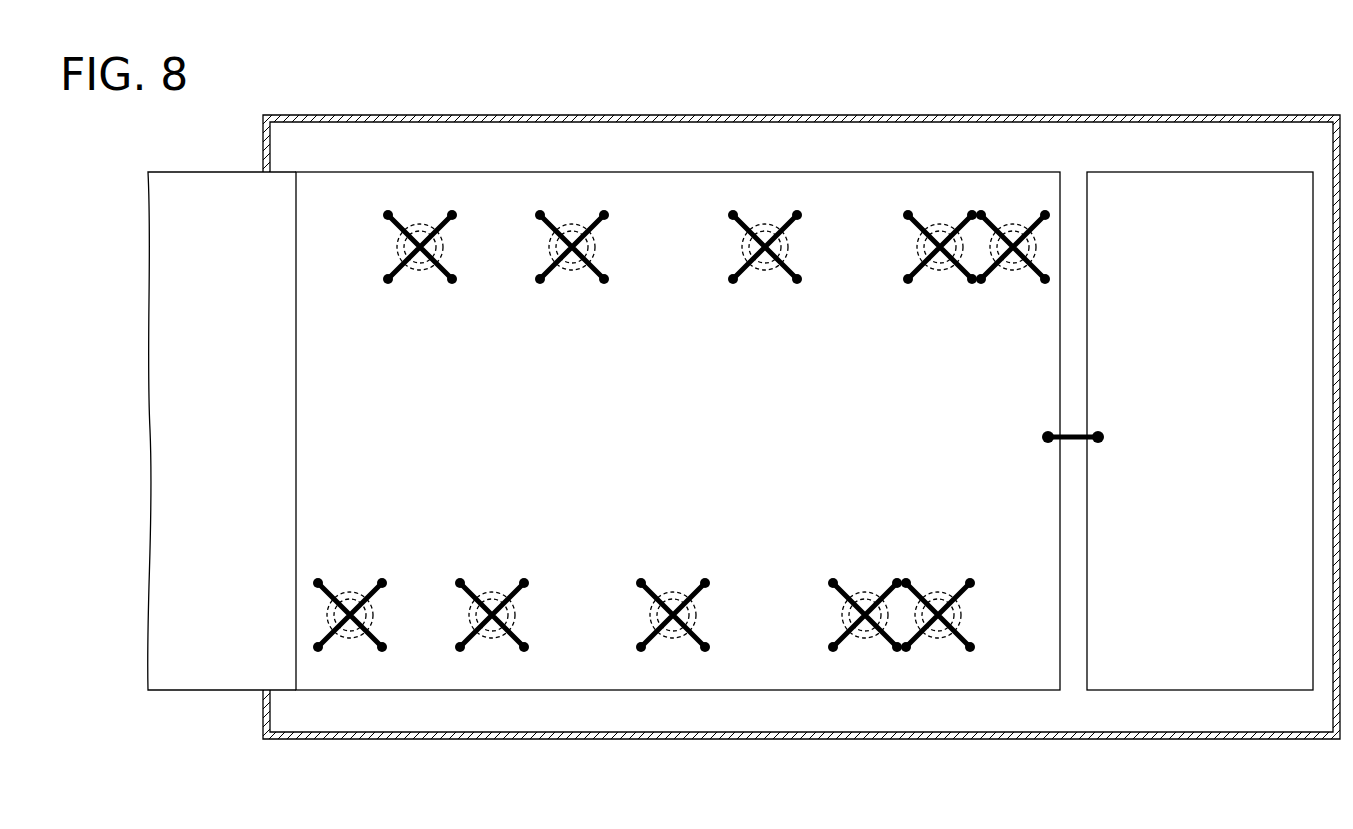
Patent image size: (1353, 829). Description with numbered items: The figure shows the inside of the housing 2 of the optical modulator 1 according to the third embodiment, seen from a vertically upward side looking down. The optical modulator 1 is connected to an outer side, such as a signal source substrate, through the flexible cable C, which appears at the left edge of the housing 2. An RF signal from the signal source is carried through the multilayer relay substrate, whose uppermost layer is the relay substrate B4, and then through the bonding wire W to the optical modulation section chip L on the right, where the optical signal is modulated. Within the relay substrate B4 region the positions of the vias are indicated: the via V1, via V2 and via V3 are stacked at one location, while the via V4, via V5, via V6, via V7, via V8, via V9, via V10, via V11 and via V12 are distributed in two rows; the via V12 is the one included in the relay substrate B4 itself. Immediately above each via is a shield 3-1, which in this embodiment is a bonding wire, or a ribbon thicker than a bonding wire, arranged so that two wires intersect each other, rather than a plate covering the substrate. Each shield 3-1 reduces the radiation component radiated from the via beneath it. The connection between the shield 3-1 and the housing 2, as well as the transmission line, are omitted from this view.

The optical modulator 1 is at (893, 68).
The housing 2 is at (568, 116).
The relay substrate B4 is at (388, 190).
The shield 3-1 is at (401, 268).
The flexible cable C is at (210, 680).
The optical modulation section chip L is at (1238, 172).
The bonding wire W is at (1076, 432).
The via V1 is at (396, 696).
The via V2 is at (396, 696).
The via V3 is at (350, 640).
The via V4 is at (396, 252).
The via V5 is at (516, 619).
The via V6 is at (548, 252).
The via V7 is at (697, 619).
The via V8 is at (741, 252).
The via V9 is at (865, 640).
The via V10 is at (916, 252).
The via V11 is at (940, 640).
The via V12 is at (1010, 222).